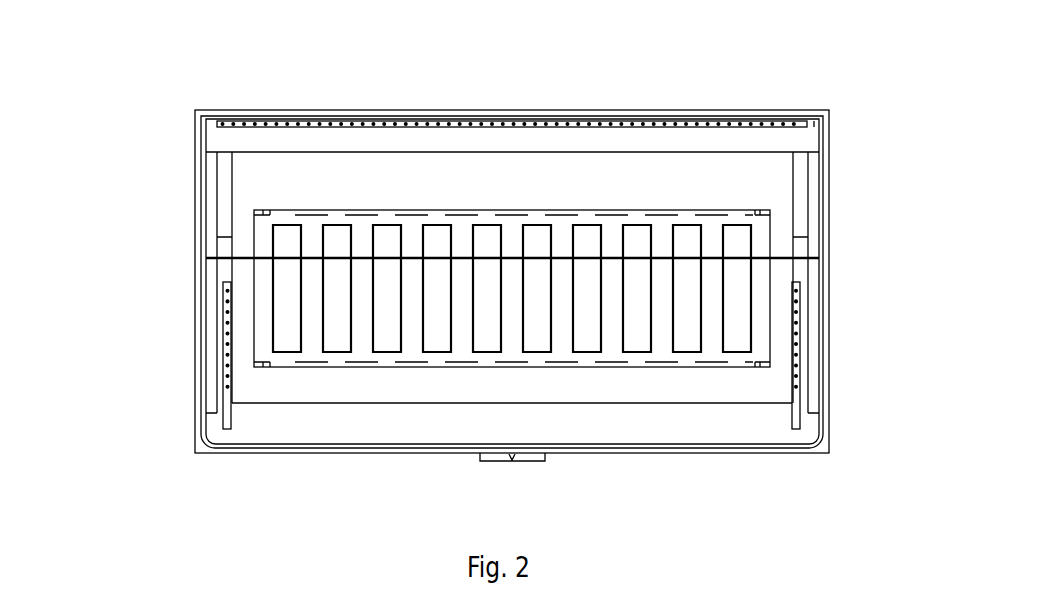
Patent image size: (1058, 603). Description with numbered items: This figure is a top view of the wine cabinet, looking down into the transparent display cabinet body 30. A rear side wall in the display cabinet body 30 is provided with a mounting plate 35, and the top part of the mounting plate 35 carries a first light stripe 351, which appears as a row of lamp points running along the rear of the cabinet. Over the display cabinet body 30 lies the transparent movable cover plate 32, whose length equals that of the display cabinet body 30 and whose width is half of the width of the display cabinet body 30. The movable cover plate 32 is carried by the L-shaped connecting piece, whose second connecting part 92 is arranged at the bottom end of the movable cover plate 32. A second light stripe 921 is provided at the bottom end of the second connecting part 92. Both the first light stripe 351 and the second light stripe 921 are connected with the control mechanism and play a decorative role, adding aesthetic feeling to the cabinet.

The transparent display cabinet body 30 is at (827, 160).
The movable cover plate 32 is at (257, 386).
The mounting plate 35 is at (813, 123).
The first light stripe 351 is at (805, 123).
The second connecting part 92 is at (797, 407).
The second light stripe 921 is at (798, 368).